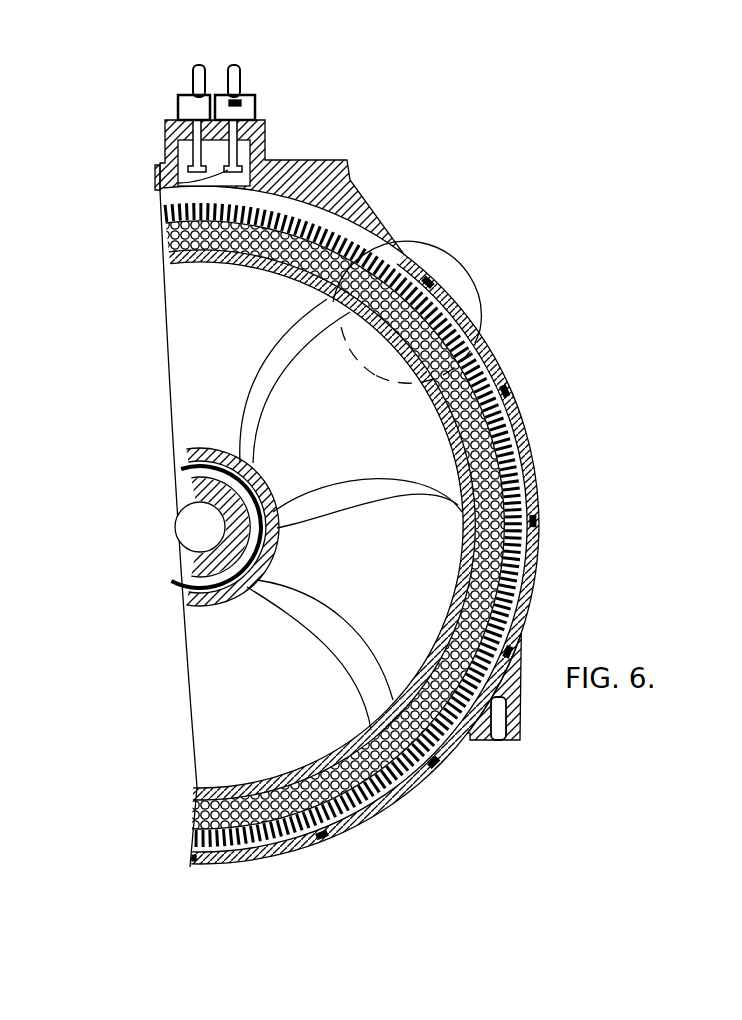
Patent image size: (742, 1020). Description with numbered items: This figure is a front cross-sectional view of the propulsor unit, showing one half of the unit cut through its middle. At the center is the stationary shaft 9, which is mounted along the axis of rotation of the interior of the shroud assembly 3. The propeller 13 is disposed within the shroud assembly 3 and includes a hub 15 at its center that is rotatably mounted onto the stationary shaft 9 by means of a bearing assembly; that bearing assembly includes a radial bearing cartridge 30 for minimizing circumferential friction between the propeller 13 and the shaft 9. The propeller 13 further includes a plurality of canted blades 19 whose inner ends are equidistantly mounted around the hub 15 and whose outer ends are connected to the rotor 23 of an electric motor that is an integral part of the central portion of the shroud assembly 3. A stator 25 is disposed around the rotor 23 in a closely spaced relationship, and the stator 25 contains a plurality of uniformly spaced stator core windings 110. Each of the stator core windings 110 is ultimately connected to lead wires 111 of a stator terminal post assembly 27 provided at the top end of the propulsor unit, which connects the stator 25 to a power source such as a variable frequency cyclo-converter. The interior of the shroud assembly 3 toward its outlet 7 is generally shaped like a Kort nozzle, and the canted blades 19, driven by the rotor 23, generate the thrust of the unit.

The shroud assembly 3 is at (413, 240).
The outlet 7 is at (465, 264).
The stationary shaft 9 is at (233, 510).
The propeller 13 is at (258, 368).
The hub 15 is at (258, 472).
The canted blades 19 is at (371, 490).
The rotor 23 is at (460, 580).
The stator 25 is at (523, 560).
The stator terminal post assembly 27 is at (266, 132).
The radial bearing cartridge 30 is at (233, 588).
The stator core windings 110 is at (378, 250).
The lead wires 111 is at (157, 178).